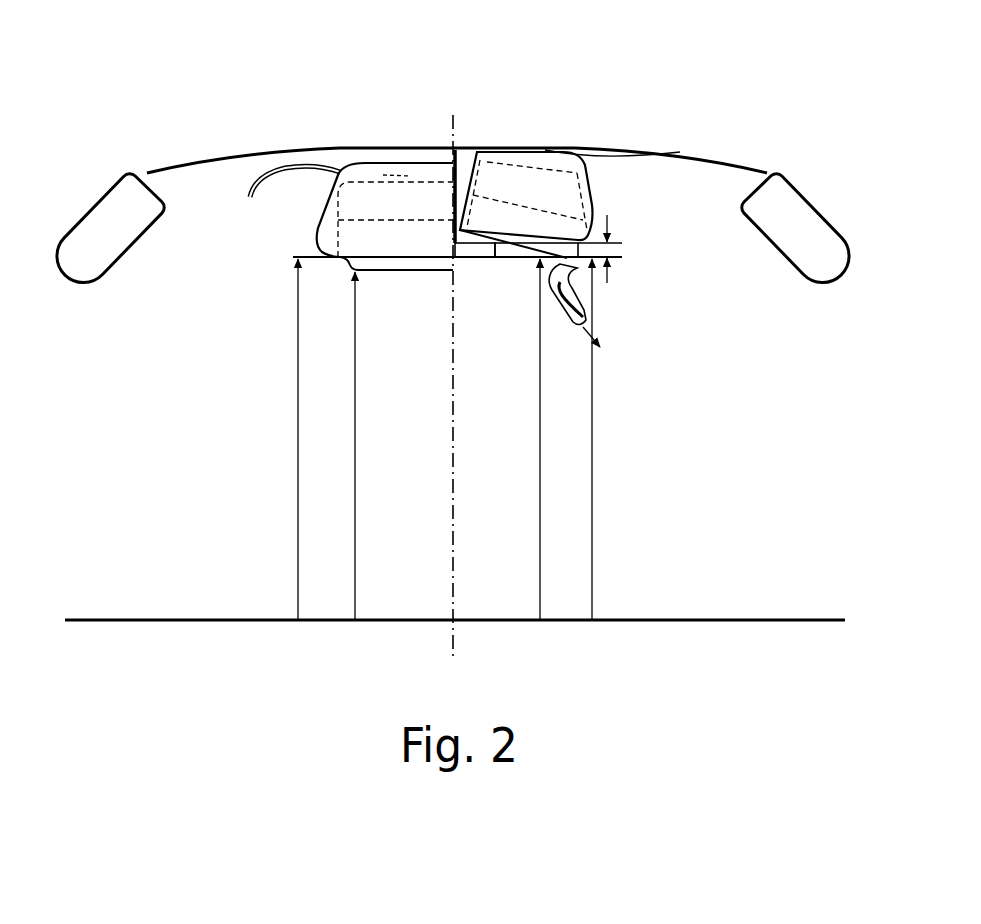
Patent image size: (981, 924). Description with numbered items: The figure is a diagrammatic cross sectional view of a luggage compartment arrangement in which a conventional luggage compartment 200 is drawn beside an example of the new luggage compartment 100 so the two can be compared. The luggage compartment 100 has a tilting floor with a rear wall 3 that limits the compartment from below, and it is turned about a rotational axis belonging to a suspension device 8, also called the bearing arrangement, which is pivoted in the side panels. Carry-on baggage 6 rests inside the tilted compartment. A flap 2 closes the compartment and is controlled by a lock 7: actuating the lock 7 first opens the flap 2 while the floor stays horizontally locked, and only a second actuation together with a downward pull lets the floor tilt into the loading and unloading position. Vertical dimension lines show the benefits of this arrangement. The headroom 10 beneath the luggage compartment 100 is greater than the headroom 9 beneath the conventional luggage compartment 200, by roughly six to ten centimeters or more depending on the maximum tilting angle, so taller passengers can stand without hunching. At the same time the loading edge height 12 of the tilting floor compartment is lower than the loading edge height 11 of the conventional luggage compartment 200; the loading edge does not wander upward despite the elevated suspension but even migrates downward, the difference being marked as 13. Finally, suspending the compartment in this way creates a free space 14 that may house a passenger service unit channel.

The luggage compartment 100 is at (572, 98).
The conventional luggage compartment 200 is at (378, 142).
The flap 2 is at (658, 183).
The rear wall 3 is at (467, 160).
The carry-on baggage 6 is at (490, 175).
The lock 7 is at (590, 300).
The suspension device 8 is at (518, 250).
The headroom 9 is at (355, 503).
The headroom 10 is at (540, 548).
The loading edge height 11 is at (298, 517).
The loading edge height 12 is at (592, 513).
The downward migration of loading edge 13 is at (622, 250).
The free space 14 is at (472, 257).